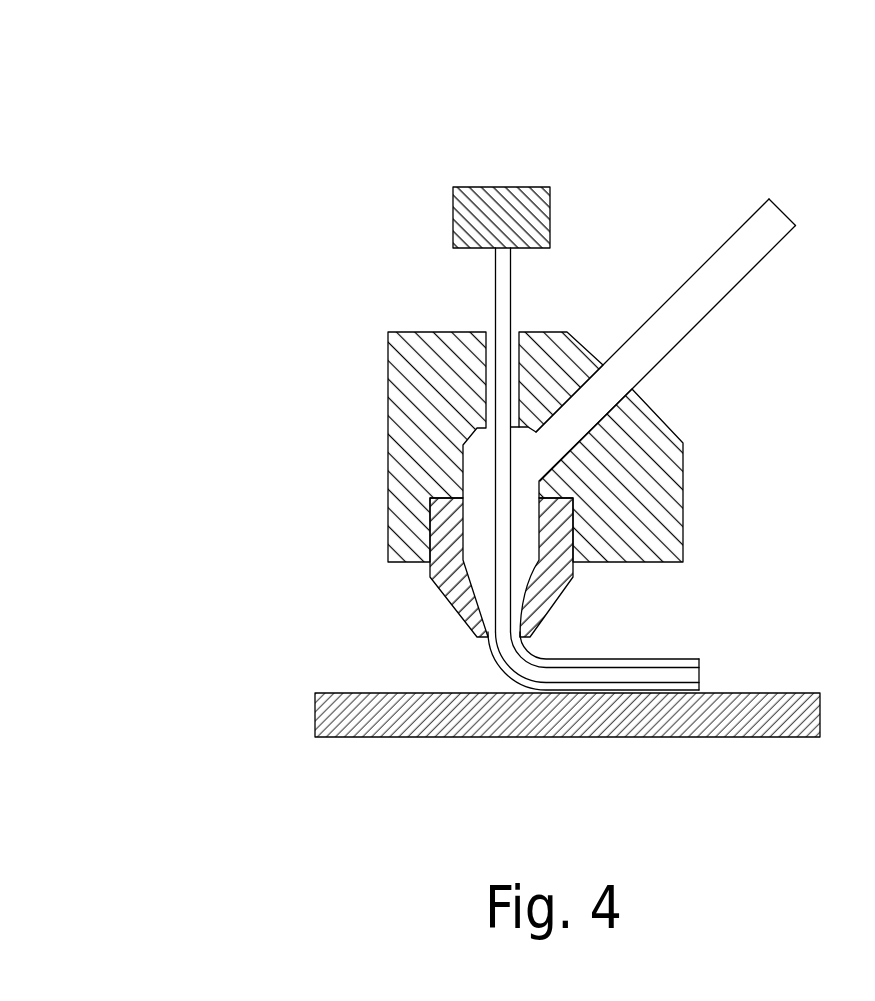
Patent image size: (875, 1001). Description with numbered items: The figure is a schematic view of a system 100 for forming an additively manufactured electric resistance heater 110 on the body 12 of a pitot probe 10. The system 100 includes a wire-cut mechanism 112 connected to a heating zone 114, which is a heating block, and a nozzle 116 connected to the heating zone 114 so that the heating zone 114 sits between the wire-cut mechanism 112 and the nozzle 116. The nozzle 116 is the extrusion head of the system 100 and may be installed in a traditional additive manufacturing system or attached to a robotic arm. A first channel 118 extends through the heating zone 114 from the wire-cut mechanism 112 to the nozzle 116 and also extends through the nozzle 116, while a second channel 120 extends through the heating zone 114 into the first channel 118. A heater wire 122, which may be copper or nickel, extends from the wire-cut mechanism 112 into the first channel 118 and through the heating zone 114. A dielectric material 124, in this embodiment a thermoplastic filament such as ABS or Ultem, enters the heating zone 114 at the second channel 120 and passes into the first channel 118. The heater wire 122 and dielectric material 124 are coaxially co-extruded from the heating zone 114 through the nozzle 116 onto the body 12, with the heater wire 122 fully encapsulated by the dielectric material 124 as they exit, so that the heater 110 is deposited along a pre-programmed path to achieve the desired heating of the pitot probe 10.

The system 100 is at (214, 101).
The pitot probe 10 is at (228, 689).
The body 12 is at (357, 708).
The electric resistance heater 110 is at (714, 643).
The wire-cut mechanism 112 is at (468, 213).
The heating zone 114 is at (422, 442).
The nozzle 116 is at (452, 575).
The first channel 118 is at (492, 382).
The second channel 120 is at (603, 365).
The heater wire 122 is at (505, 288).
The dielectric material 124 is at (687, 308).